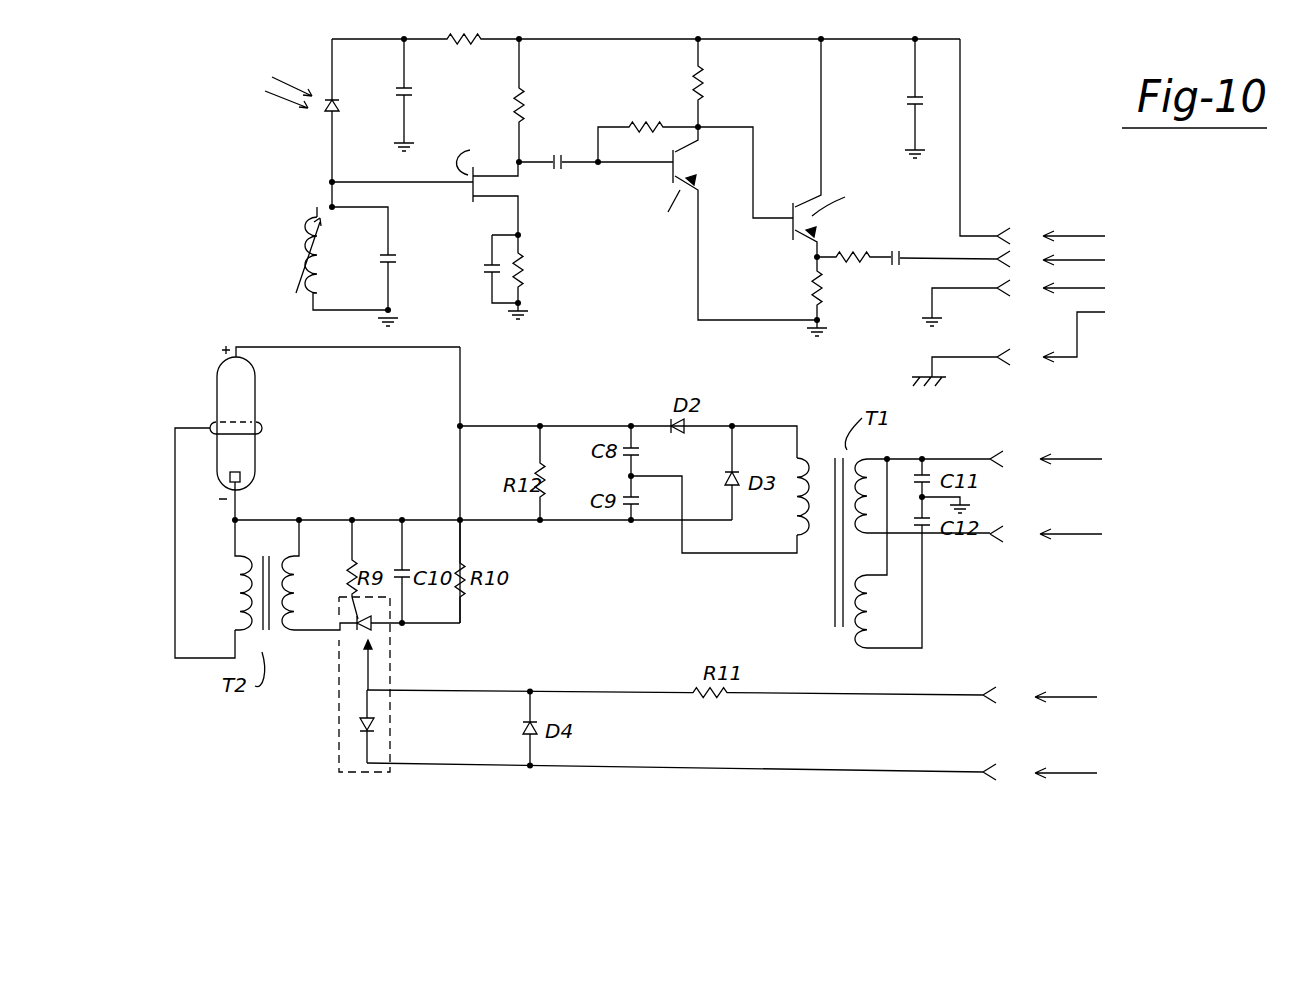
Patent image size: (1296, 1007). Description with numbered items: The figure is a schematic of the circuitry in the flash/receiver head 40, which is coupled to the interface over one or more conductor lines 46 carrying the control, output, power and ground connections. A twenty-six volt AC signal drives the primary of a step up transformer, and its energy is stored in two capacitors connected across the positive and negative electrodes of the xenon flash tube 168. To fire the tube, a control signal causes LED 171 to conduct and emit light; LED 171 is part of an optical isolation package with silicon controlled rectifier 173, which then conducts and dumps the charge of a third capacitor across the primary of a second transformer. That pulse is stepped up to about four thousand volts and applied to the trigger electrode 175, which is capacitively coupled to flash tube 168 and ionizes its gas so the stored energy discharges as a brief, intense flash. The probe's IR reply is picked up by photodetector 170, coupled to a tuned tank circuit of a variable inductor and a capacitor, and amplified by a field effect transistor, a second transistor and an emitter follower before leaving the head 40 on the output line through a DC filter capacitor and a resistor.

The flash/receiver head 40 is at (1005, 70).
The conductor lines 46 is at (1093, 213).
The xenon flash tube 168 is at (228, 380).
The photodetector 170 is at (322, 113).
The LED 171 is at (355, 725).
The silicon controlled rectifier 173 is at (358, 633).
The trigger electrode 175 is at (210, 432).